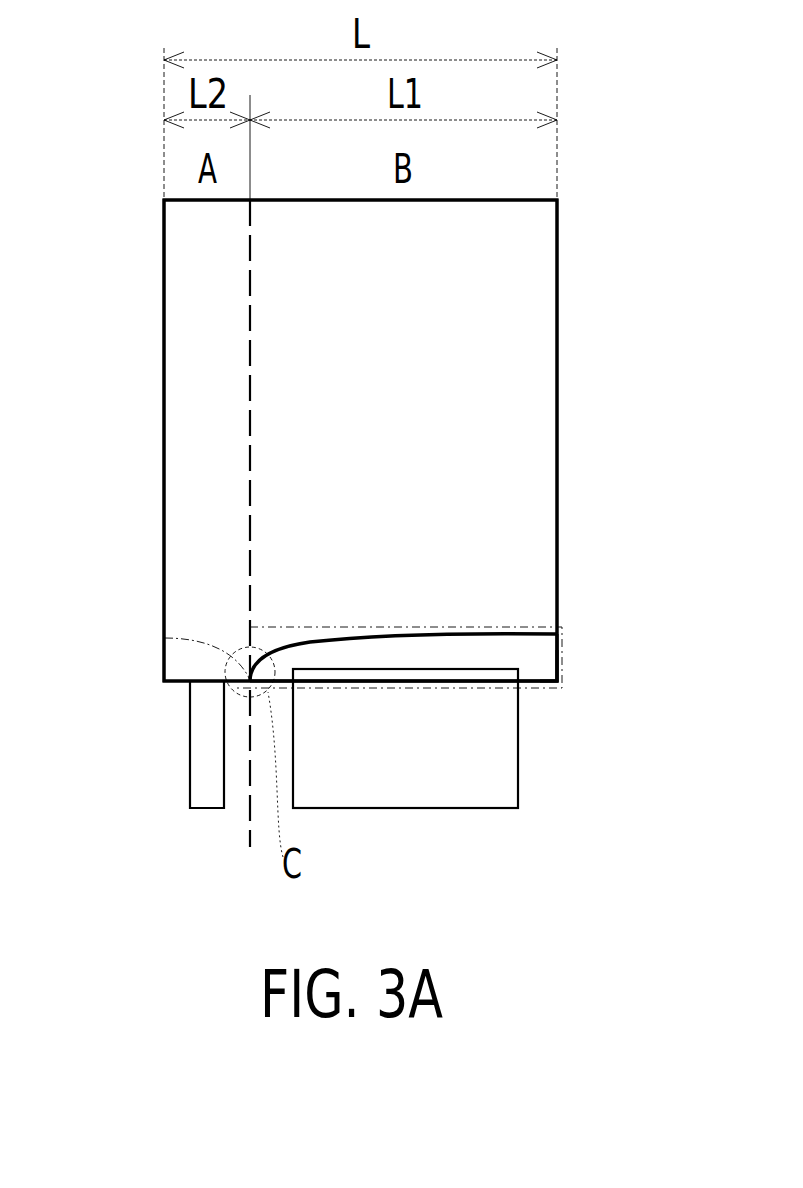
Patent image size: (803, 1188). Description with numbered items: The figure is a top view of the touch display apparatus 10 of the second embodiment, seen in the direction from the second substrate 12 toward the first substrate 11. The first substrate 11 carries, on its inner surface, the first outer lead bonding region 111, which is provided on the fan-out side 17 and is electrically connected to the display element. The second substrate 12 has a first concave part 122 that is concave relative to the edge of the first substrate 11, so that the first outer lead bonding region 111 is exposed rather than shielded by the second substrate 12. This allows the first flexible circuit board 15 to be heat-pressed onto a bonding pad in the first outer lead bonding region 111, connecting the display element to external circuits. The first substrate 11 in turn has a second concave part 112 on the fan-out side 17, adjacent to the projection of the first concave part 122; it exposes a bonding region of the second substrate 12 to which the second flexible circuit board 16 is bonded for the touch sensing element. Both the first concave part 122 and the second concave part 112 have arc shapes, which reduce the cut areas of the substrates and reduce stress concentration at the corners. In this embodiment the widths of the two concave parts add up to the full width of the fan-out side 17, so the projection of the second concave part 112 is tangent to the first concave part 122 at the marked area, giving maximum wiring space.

The touch display apparatus 10 is at (642, 910).
The first substrate 11 is at (537, 662).
The second substrate 12 is at (520, 296).
The first flexible circuit board 15 is at (455, 785).
The second flexible circuit board 16 is at (210, 790).
The fan-out side 17 is at (563, 698).
The first outer lead bonding region 111 is at (563, 640).
The second concave part 112 is at (190, 660).
The first concave part 122 is at (316, 642).